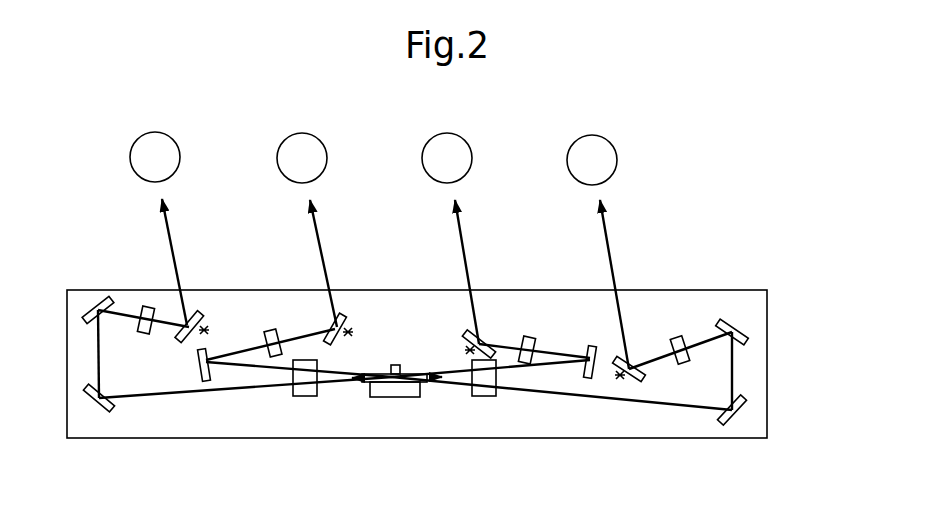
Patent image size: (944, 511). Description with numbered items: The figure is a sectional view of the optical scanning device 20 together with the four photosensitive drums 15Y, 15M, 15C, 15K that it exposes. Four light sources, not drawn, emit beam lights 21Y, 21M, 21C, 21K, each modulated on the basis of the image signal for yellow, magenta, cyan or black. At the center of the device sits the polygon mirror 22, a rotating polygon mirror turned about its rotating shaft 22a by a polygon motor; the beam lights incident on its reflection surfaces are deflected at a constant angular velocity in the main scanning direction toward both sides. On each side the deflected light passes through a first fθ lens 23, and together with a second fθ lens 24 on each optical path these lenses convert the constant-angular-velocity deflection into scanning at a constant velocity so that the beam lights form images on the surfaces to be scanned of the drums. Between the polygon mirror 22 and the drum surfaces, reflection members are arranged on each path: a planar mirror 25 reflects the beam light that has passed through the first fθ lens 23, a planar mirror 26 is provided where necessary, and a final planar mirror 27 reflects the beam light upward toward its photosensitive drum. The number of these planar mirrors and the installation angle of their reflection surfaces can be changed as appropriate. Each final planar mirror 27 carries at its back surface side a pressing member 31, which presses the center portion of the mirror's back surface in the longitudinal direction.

The optical scanning device 20 is at (744, 221).
The photosensitive drum 15Y is at (166, 150).
The photosensitive drum 15M is at (312, 150).
The photosensitive drum 15C is at (457, 150).
The photosensitive drum 15K is at (602, 152).
The beam light 21Y is at (166, 218).
The beam light 21M is at (323, 218).
The beam light 21C is at (465, 218).
The beam light 21K is at (612, 218).
The polygon mirror 22 is at (370, 398).
The rotating shaft 22a is at (395, 365).
The first fθ lens 23 is at (305, 396).
The second fθ lens 24 is at (147, 307).
The planar mirror 25 is at (99, 406).
The planar mirror 26 is at (100, 303).
The final planar mirror 27 is at (196, 313).
The pressing member 31 is at (206, 329).